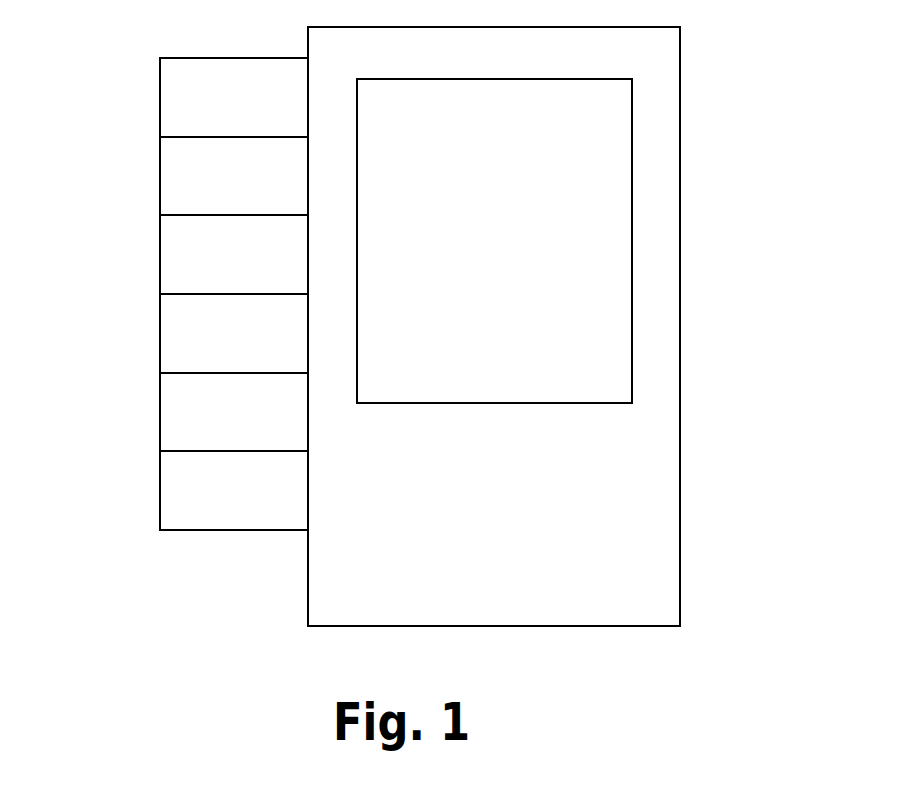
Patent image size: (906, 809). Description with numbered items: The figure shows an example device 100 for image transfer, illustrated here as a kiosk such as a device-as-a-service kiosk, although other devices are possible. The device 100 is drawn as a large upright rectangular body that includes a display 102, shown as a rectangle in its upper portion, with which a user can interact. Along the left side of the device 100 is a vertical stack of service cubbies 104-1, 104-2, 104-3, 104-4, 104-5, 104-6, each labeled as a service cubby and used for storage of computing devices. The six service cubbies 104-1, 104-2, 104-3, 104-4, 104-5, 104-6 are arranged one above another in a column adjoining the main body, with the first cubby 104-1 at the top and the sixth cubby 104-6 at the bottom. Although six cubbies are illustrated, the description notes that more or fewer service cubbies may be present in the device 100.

The device 100 is at (680, 62).
The display 102 is at (512, 253).
The service cubby 104-1 is at (160, 94).
The service cubby 104-2 is at (160, 173).
The service cubby 104-3 is at (160, 251).
The service cubby 104-4 is at (160, 330).
The service cubby 104-5 is at (160, 409).
The service cubby 104-6 is at (160, 488).